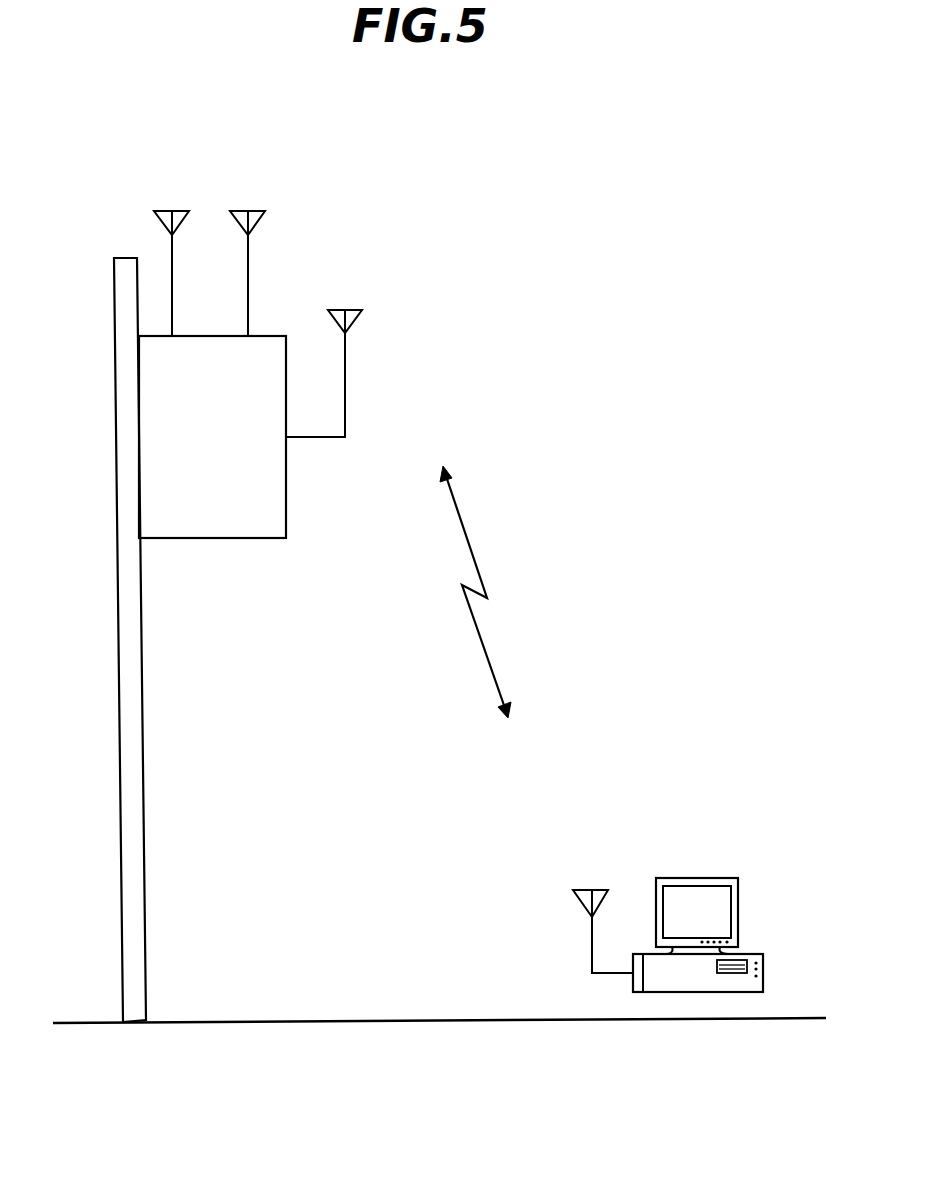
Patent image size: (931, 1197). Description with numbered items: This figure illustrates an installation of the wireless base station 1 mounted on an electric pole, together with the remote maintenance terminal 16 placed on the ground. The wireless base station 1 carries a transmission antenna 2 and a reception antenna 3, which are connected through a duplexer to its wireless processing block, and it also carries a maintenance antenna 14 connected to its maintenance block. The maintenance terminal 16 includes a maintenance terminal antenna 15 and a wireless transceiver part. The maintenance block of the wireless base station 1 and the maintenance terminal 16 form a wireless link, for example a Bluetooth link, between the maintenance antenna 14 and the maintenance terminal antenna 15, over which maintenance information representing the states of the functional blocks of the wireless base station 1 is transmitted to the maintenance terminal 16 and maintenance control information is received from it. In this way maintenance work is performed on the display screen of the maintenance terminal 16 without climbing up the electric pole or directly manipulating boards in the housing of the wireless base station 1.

The wireless base station 1 is at (235, 539).
The transmission antenna 2 is at (177, 210).
The reception antenna 3 is at (253, 210).
The maintenance antenna 14 is at (353, 311).
The maintenance terminal antenna 15 is at (583, 890).
The maintenance terminal 16 is at (690, 878).